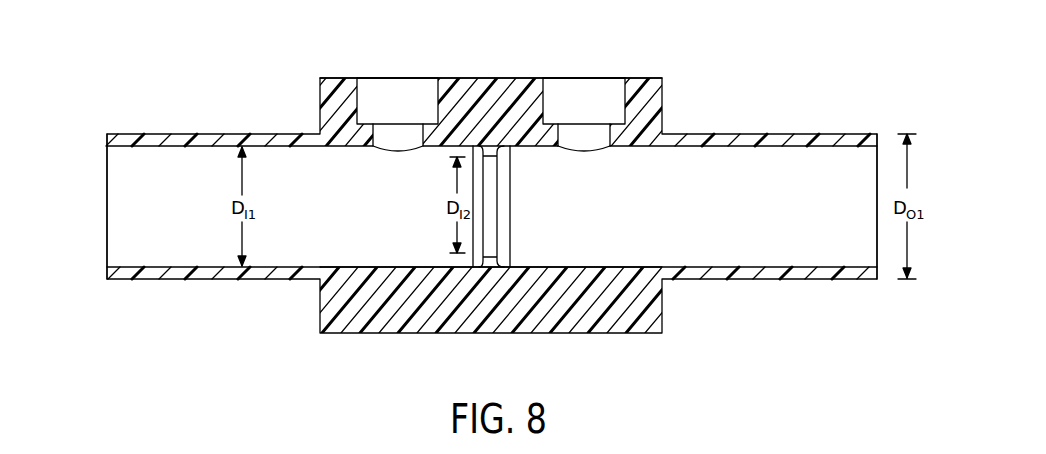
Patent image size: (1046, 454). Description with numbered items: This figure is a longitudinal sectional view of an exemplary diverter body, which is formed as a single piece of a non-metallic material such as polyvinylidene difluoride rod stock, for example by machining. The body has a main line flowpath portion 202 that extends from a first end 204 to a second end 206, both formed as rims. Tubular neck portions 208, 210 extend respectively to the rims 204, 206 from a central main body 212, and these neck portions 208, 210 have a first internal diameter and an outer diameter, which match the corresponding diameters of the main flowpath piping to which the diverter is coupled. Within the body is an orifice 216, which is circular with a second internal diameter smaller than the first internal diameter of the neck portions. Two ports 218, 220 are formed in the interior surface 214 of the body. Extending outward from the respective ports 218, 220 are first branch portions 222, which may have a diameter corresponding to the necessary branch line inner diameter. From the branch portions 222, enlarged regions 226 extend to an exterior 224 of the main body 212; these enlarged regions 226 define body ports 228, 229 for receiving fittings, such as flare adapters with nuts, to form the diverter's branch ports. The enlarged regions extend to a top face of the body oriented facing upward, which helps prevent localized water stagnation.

The main line flowpath portion 202 is at (727, 170).
The first end 204 is at (878, 258).
The second end 206 is at (107, 167).
The tubular neck portion 208 is at (770, 272).
The tubular neck portion 210 is at (222, 275).
The main body 212 is at (485, 320).
The interior surface 214 is at (627, 272).
The orifice 216 is at (493, 222).
The port 218 is at (585, 156).
The port 220 is at (398, 156).
The first branch portion 222 is at (583, 138).
The exterior 224 is at (492, 78).
The enlarged region 226 is at (572, 90).
The body port 228 is at (585, 77).
The body port 229 is at (400, 77).